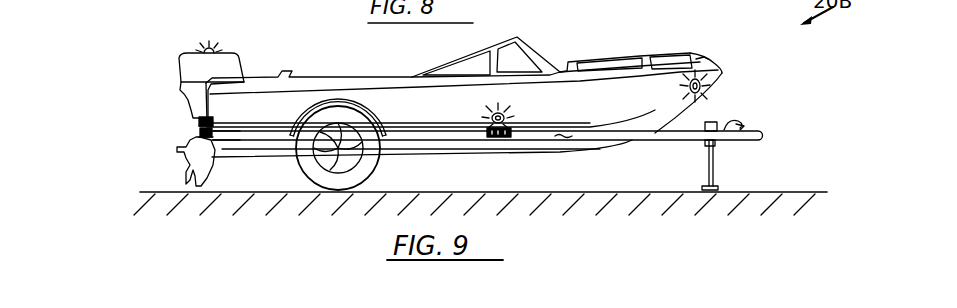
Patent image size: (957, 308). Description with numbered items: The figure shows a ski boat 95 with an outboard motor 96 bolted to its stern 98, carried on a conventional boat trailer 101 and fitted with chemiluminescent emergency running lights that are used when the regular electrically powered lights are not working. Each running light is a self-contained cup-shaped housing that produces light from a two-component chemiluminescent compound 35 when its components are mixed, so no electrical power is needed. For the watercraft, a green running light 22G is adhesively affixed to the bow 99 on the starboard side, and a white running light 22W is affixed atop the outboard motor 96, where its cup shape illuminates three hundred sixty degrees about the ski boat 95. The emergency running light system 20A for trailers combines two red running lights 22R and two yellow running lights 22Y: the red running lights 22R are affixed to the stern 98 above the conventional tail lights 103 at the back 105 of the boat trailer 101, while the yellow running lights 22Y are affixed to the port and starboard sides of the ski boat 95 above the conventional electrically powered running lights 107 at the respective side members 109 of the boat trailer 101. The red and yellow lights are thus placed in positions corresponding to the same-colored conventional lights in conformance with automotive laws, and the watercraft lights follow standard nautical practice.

The emergency running light system for trailers 20A is at (146, 62).
The white running light 22W is at (214, 51).
The red running light 22R is at (198, 130).
The yellow running light 22Y is at (508, 114).
The green running light 22G is at (699, 78).
The two-component chemiluminescent compound 35 is at (210, 44).
The ski boat 95 is at (613, 32).
The outboard motor 96 is at (177, 75).
The stern 98 is at (200, 114).
The bow 99 is at (722, 72).
The boat trailer 101 is at (787, 161).
The tail lights 103 is at (200, 134).
The back of the boat trailer 105 is at (228, 136).
The conventional electrically powered running lights 107 is at (498, 136).
The side members 109 is at (563, 139).